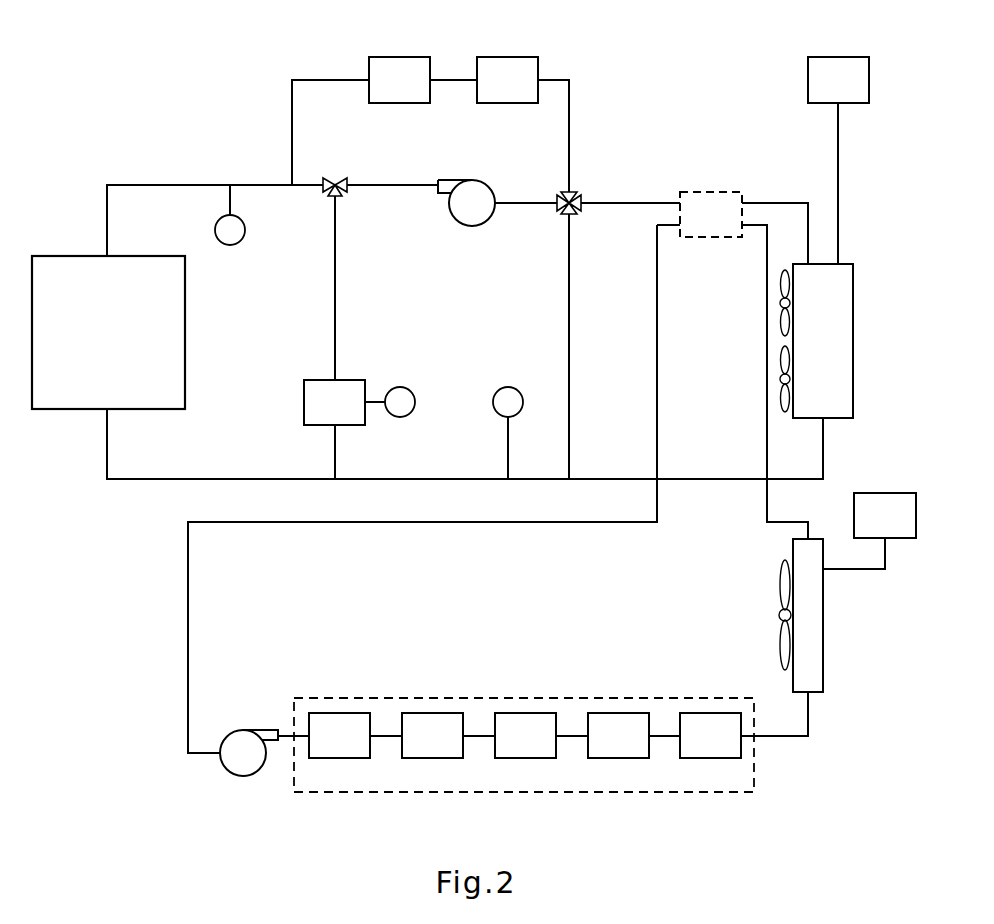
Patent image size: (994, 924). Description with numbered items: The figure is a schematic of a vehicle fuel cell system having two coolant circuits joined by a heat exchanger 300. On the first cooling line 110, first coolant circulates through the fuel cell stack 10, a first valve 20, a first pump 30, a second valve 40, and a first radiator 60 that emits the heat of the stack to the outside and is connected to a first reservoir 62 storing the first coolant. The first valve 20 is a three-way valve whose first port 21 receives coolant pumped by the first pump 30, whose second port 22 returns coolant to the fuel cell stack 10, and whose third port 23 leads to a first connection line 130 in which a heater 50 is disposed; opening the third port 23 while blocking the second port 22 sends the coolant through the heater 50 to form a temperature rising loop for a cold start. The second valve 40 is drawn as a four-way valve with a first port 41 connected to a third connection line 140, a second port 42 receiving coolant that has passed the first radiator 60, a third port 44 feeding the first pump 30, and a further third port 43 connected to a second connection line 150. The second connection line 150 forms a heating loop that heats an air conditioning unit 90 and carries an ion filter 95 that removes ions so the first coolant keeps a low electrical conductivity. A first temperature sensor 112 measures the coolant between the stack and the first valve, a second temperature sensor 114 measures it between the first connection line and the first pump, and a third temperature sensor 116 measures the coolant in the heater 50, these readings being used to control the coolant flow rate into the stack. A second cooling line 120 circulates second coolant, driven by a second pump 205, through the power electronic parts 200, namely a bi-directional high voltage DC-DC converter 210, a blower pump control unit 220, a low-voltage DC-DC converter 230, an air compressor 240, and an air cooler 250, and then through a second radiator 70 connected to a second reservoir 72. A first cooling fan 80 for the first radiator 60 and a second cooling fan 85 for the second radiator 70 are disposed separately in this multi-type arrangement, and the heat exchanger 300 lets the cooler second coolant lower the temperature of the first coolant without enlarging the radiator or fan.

The fuel cell stack 10 is at (53, 255).
The first valve 20 is at (331, 178).
The first port 21 is at (348, 189).
The second port 22 is at (322, 191).
The third port 23 is at (332, 201).
The first pump 30 is at (473, 190).
The second valve 40 is at (587, 192).
The first port 41 is at (567, 216).
The second port 42 is at (584, 208).
The third port 43 is at (566, 191).
The third port 44 is at (556, 208).
The heater 50 is at (304, 402).
The first radiator 60 is at (853, 338).
The first reservoir 62 is at (838, 56).
The second radiator 70 is at (823, 640).
The second reservoir 72 is at (885, 492).
The first cooling fan 80 is at (780, 379).
The second cooling fan 85 is at (778, 616).
The air conditioning unit 90 is at (400, 56).
The ion filter 95 is at (507, 56).
The first cooling line 110 is at (168, 184).
The first temperature sensor 112 is at (230, 245).
The second temperature sensor 114 is at (508, 387).
The third temperature sensor 116 is at (400, 387).
The second cooling line 120 is at (188, 637).
The first connection line 130 is at (334, 453).
The third connection line 140 is at (571, 398).
The second connection line 150 is at (318, 79).
The power electronic parts 200 is at (754, 775).
The second pump 205 is at (255, 728).
The bi-directional high voltage DC-DC converter 210 is at (340, 712).
The blower pump control unit 220 is at (433, 712).
The low-voltage DC-DC converter 230 is at (526, 712).
The air compressor 240 is at (619, 712).
The air cooler 250 is at (711, 712).
The heat exchanger 300 is at (712, 191).